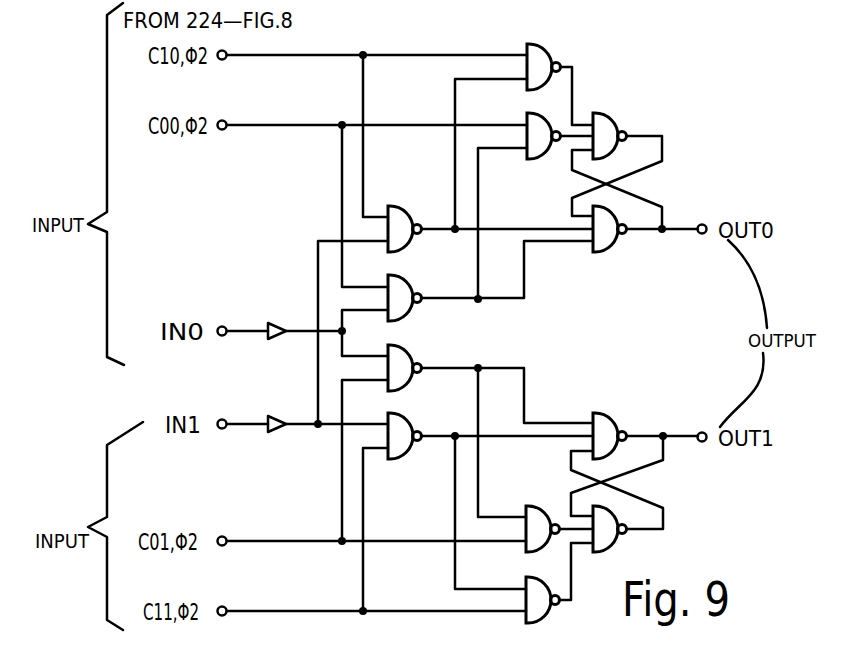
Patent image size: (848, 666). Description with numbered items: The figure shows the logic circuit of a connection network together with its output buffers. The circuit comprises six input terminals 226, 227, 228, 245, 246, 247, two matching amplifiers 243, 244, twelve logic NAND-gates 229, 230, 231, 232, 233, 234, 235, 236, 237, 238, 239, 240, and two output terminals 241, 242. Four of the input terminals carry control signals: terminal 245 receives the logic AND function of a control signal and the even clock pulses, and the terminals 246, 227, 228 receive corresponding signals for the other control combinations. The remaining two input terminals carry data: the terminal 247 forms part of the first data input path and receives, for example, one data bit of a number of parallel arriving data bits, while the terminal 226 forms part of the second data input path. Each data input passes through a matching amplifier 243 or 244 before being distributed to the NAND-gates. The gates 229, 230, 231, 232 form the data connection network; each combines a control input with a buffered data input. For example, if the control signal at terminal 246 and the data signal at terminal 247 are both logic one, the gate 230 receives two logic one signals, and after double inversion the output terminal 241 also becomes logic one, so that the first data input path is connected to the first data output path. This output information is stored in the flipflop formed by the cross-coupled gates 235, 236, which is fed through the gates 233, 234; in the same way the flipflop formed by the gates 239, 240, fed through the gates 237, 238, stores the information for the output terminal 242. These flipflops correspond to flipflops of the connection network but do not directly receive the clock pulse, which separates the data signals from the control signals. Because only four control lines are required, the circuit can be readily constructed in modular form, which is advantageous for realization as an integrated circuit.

The input terminal 226 is at (225, 428).
The input terminal 227 is at (225, 545).
The input terminal 228 is at (225, 615).
The NAND-gate 229 is at (409, 211).
The NAND-gate 230 is at (417, 270).
The NAND-gate 231 is at (417, 340).
The NAND-gate 232 is at (417, 408).
The NAND-gate 233 is at (548, 50).
The NAND-gate 234 is at (557, 108).
The NAND-gate 235 is at (614, 117).
The NAND-gate 236 is at (614, 248).
The NAND-gate 237 is at (546, 548).
The NAND-gate 238 is at (546, 619).
The NAND-gate 239 is at (621, 408).
The NAND-gate 240 is at (613, 548).
The output terminal 241 is at (705, 233).
The output terminal 242 is at (705, 441).
The matching amplifier 243 is at (281, 338).
The matching amplifier 244 is at (281, 431).
The input terminal 245 is at (226, 59).
The input terminal 246 is at (226, 129).
The input terminal 247 is at (225, 335).